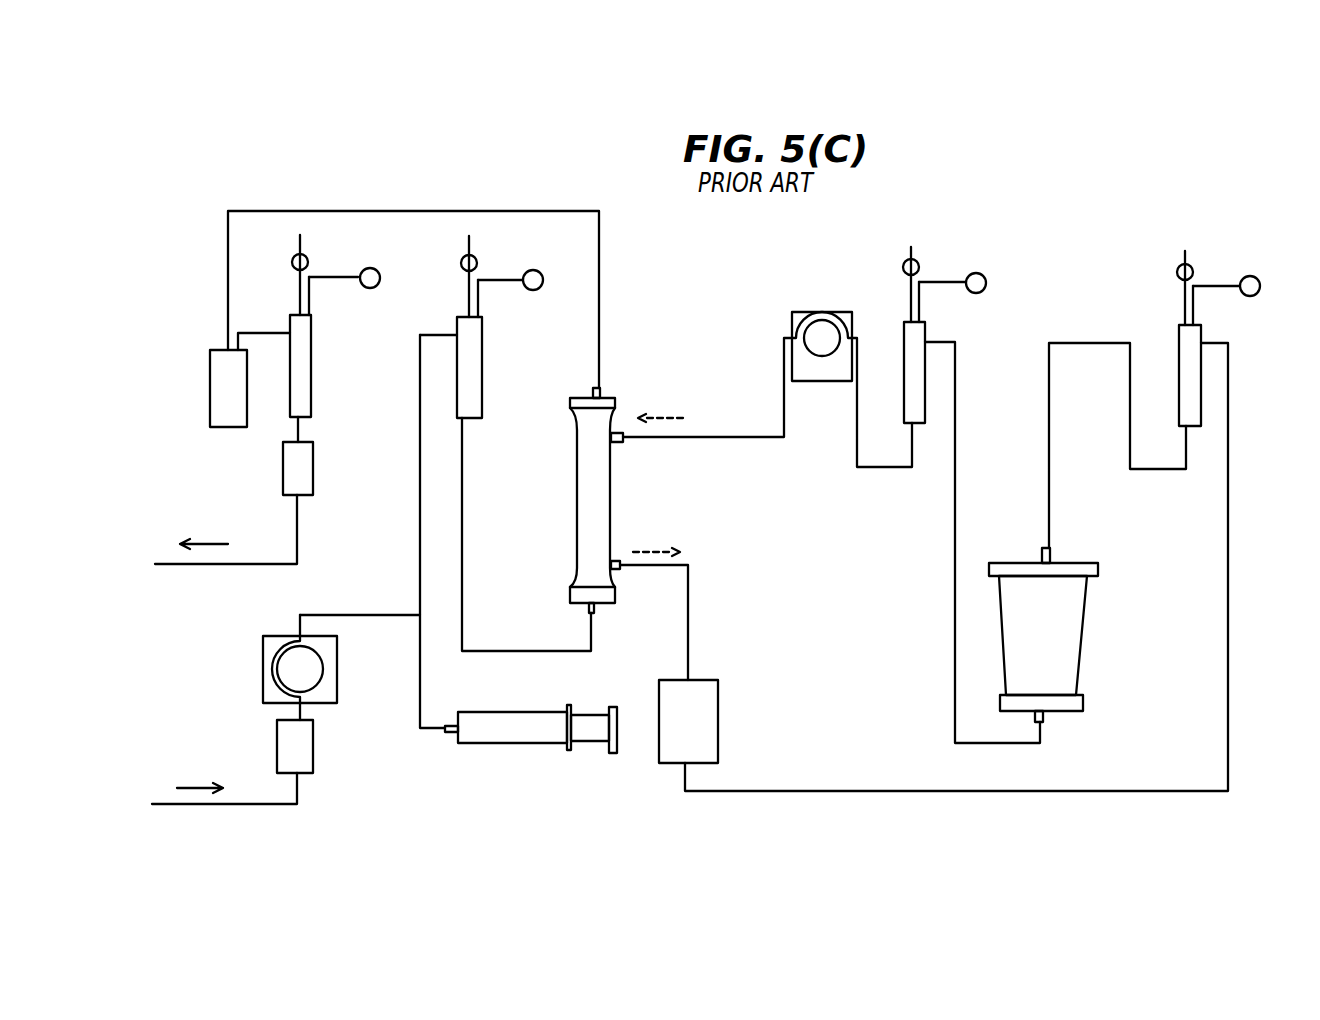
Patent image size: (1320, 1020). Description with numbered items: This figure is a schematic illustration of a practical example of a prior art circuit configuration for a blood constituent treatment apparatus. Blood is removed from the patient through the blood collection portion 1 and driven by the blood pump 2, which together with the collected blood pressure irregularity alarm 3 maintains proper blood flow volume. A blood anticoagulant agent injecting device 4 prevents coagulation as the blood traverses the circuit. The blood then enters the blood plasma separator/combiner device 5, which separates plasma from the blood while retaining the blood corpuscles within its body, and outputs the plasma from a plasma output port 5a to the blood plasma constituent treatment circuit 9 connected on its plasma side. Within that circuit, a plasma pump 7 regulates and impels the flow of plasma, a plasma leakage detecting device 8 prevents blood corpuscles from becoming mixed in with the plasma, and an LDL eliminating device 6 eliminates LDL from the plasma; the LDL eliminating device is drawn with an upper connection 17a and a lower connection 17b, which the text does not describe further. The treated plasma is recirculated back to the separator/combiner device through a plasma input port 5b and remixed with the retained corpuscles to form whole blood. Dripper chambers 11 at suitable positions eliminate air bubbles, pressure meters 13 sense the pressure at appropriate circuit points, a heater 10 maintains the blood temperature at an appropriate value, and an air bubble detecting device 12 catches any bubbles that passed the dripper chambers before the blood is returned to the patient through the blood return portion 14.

The blood collection portion 1 is at (152, 804).
The blood pump 2 is at (263, 680).
The collected blood pressure irregularity alarm 3 is at (310, 748).
The blood anticoagulant agent injecting device 4 is at (498, 731).
The blood plasma separator/combiner device 5 is at (602, 530).
The plasma output port 5a is at (623, 568).
The plasma input port 5b is at (627, 433).
The LDL eliminating device 6 is at (1062, 657).
The plasma pump 7 is at (820, 312).
The plasma leakage detecting device 8 is at (708, 737).
The blood plasma constituent treatment circuit 9 is at (843, 584).
The heater 10 is at (215, 402).
The dripper chamber 11 is at (303, 396).
The air bubble detecting device 12 is at (305, 481).
The pressure meter 13 is at (378, 271).
The blood return portion 14 is at (155, 564).
The column inlet 17a is at (1050, 548).
The column outlet 17b is at (1043, 722).